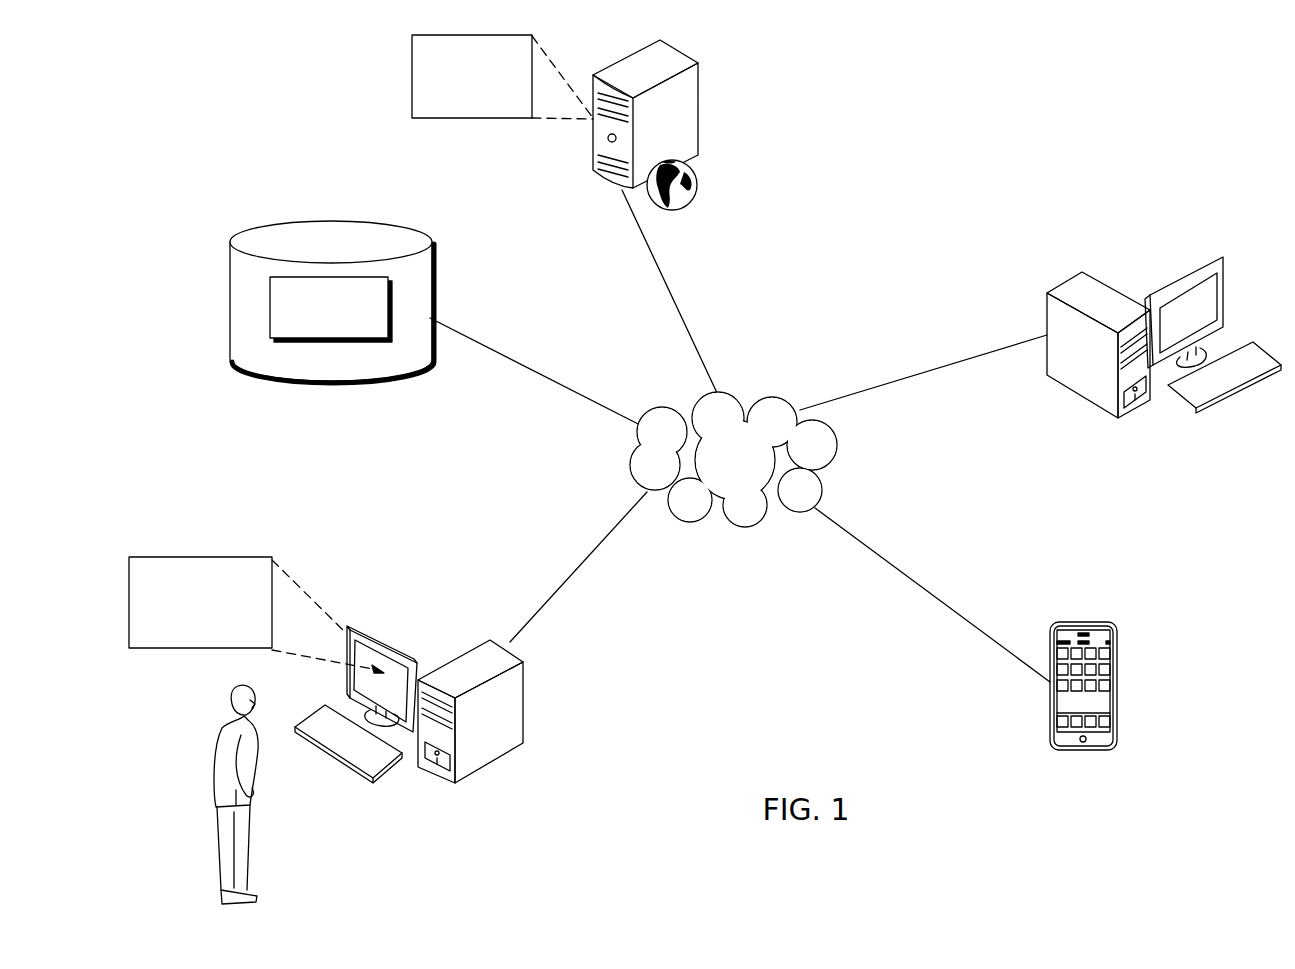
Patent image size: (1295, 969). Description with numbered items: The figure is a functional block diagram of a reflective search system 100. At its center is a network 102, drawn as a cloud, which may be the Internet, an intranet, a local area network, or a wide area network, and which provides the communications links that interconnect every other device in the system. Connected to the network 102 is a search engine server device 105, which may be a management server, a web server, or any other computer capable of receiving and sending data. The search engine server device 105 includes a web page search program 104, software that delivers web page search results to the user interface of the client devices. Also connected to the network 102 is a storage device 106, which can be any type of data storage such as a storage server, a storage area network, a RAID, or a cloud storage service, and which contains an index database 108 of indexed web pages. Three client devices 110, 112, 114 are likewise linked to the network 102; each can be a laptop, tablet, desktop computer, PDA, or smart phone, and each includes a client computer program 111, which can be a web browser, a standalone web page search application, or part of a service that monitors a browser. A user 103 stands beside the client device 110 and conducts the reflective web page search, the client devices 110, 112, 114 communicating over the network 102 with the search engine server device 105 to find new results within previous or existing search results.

The reflective search system 100 is at (1178, 77).
The network 102 is at (772, 394).
The user 103 is at (214, 728).
The web page search program 104 is at (412, 70).
The search engine server device 105 is at (698, 95).
The storage device 106 is at (291, 327).
The index database 108 is at (332, 338).
The client device 110 is at (476, 750).
The client computer program 111 is at (192, 557).
The client device 112 is at (1050, 733).
The client device 114 is at (1071, 273).